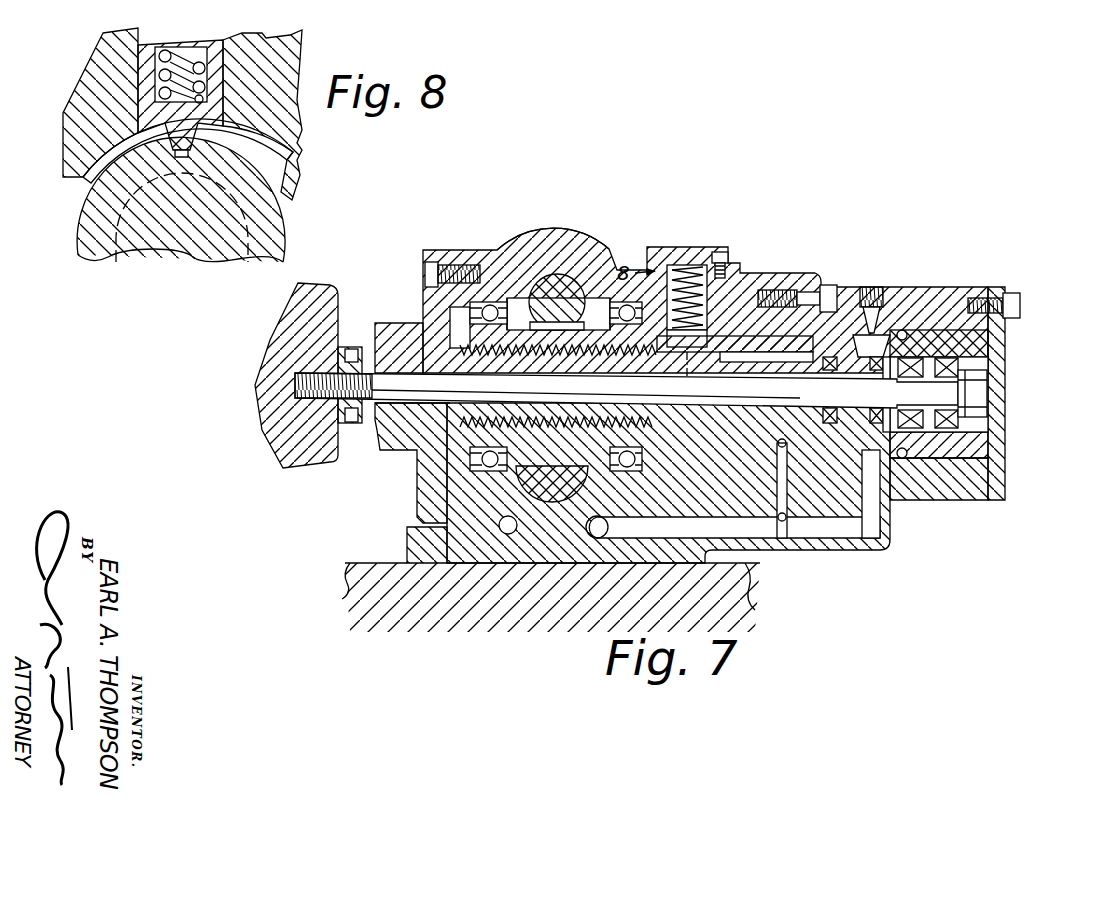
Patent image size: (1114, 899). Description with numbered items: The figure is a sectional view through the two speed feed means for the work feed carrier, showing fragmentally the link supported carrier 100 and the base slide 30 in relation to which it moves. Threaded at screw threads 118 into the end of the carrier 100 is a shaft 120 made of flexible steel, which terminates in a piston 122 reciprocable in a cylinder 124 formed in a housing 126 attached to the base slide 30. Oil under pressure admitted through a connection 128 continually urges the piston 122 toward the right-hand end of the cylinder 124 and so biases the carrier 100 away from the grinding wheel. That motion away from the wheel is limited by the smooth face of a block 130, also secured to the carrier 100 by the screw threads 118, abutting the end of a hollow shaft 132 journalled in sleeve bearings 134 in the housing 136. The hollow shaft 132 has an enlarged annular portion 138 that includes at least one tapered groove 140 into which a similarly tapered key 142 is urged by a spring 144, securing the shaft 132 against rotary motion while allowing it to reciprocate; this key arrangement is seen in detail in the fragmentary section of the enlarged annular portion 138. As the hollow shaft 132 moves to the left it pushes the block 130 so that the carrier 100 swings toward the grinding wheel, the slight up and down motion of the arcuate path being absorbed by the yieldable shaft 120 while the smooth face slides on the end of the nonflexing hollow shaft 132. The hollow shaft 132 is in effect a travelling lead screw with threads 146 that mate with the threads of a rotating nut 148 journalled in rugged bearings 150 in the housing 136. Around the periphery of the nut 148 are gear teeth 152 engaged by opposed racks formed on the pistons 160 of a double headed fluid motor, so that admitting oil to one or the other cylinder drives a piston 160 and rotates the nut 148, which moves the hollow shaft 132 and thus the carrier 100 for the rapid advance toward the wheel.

In FIG. 7, the base slide 30 is at (377, 587).
In FIG. 7, the link supported carrier 100 is at (298, 394).
In FIG. 7, the screw threads 118 is at (322, 377).
In FIG. 7, the shaft 120 is at (624, 349).
In FIG. 7, the piston 122 is at (927, 433).
In FIG. 7, the cylinder 124 is at (1006, 457).
In FIG. 7, the housing 126 is at (910, 485).
In FIG. 7, the connection 128 is at (366, 350).
In FIG. 7, the block 130 is at (340, 357).
In FIG. 8, the hollow shaft 132 is at (173, 227).
In FIG. 7, the hollow shaft 132 is at (377, 420).
In FIG. 7, the sleeve bearings 134 is at (722, 344).
In FIG. 7, the housing 136 is at (693, 552).
In FIG. 8, the enlarged annular portion 138 is at (266, 250).
In FIG. 7, the enlarged annular portion 138 is at (697, 440).
In FIG. 8, the tapered groove 140 is at (222, 142).
In FIG. 7, the tapered groove 140 is at (717, 350).
In FIG. 8, the tapered key 142 is at (193, 137).
In FIG. 7, the tapered key 142 is at (697, 346).
In FIG. 8, the spring 144 is at (207, 72).
In FIG. 7, the spring 144 is at (690, 268).
In FIG. 7, the threads 146 is at (514, 480).
In FIG. 7, the rotating nut 148 is at (545, 281).
In FIG. 7, the bearings 150 is at (488, 308).
In FIG. 7, the gear teeth 152 is at (580, 318).
In FIG. 7, the piston 160 is at (553, 295).